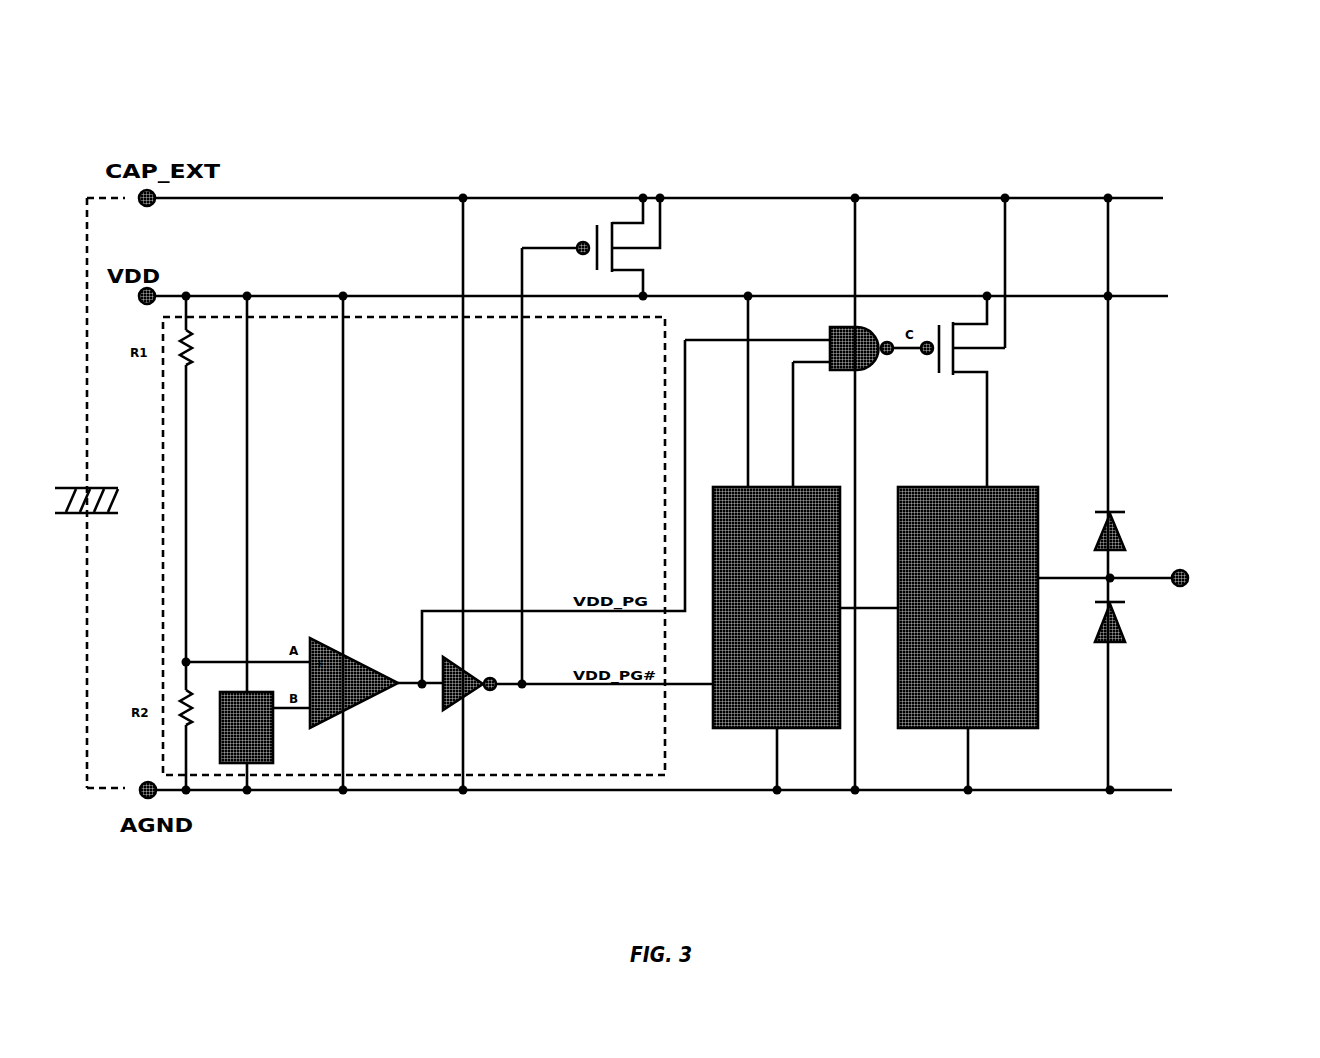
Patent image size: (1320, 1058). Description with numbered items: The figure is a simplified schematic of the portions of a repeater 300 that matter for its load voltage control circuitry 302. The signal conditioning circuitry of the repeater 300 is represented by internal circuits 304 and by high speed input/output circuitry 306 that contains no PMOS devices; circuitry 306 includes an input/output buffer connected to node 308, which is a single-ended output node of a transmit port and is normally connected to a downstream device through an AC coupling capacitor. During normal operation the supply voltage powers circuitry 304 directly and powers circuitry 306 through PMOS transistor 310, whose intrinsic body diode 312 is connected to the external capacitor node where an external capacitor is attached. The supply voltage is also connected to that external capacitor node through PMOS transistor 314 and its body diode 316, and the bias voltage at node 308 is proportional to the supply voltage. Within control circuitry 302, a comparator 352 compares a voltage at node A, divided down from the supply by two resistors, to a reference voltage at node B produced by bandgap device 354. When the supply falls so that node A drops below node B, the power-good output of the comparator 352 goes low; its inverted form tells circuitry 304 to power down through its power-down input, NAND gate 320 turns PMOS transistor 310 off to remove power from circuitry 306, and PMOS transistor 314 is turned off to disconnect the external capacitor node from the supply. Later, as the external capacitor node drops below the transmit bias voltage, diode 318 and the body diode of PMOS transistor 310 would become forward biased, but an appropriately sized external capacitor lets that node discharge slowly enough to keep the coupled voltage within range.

The repeater 300 is at (84, 414).
The load voltage control circuitry 302 is at (414, 546).
The internal circuits 304 is at (776, 607).
The high speed I/O without PMOS 306 is at (968, 607).
The HS I/O node 308 is at (1170, 555).
The PMOS transistor 310 is at (934, 391).
The body diode of PMOS transistor 310 312 is at (1020, 372).
The PMOS transistor 314 is at (582, 222).
The body diode of PMOS transistor 314 316 is at (686, 232).
The diode 318 is at (1166, 494).
The NAND gate 320 is at (822, 367).
The comparator 352 is at (376, 645).
The bandgap device 354 is at (292, 766).